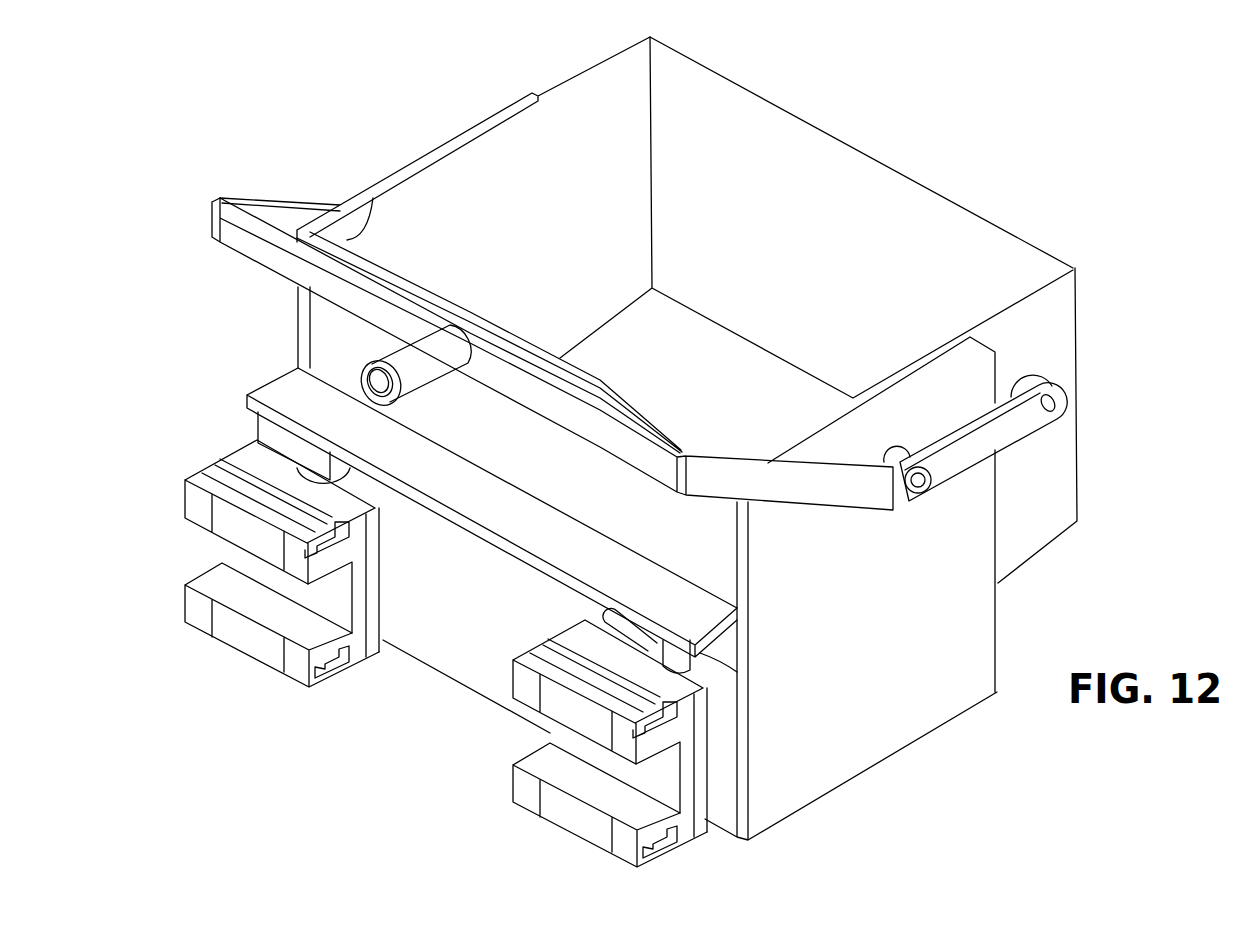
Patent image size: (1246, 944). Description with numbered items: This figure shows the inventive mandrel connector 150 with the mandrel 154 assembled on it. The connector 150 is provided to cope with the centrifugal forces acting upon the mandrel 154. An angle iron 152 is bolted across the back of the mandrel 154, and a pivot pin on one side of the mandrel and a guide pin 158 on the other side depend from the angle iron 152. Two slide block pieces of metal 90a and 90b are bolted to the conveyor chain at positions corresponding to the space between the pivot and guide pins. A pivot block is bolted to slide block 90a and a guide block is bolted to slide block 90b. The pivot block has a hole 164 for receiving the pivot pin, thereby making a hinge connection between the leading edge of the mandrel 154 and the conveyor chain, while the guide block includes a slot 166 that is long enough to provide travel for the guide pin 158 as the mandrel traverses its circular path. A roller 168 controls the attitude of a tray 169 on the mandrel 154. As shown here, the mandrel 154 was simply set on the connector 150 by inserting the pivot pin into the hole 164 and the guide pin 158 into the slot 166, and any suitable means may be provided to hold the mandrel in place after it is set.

The connector 150 is at (188, 440).
The angle iron 152 is at (733, 643).
The mandrel 154 is at (910, 672).
The guide pin 158 is at (735, 668).
The hole 164 is at (360, 470).
The slot 166 is at (616, 612).
The roller 168 is at (415, 375).
The tray 169 is at (1070, 360).
The slide block 90a is at (195, 648).
The slide block 90b is at (602, 735).